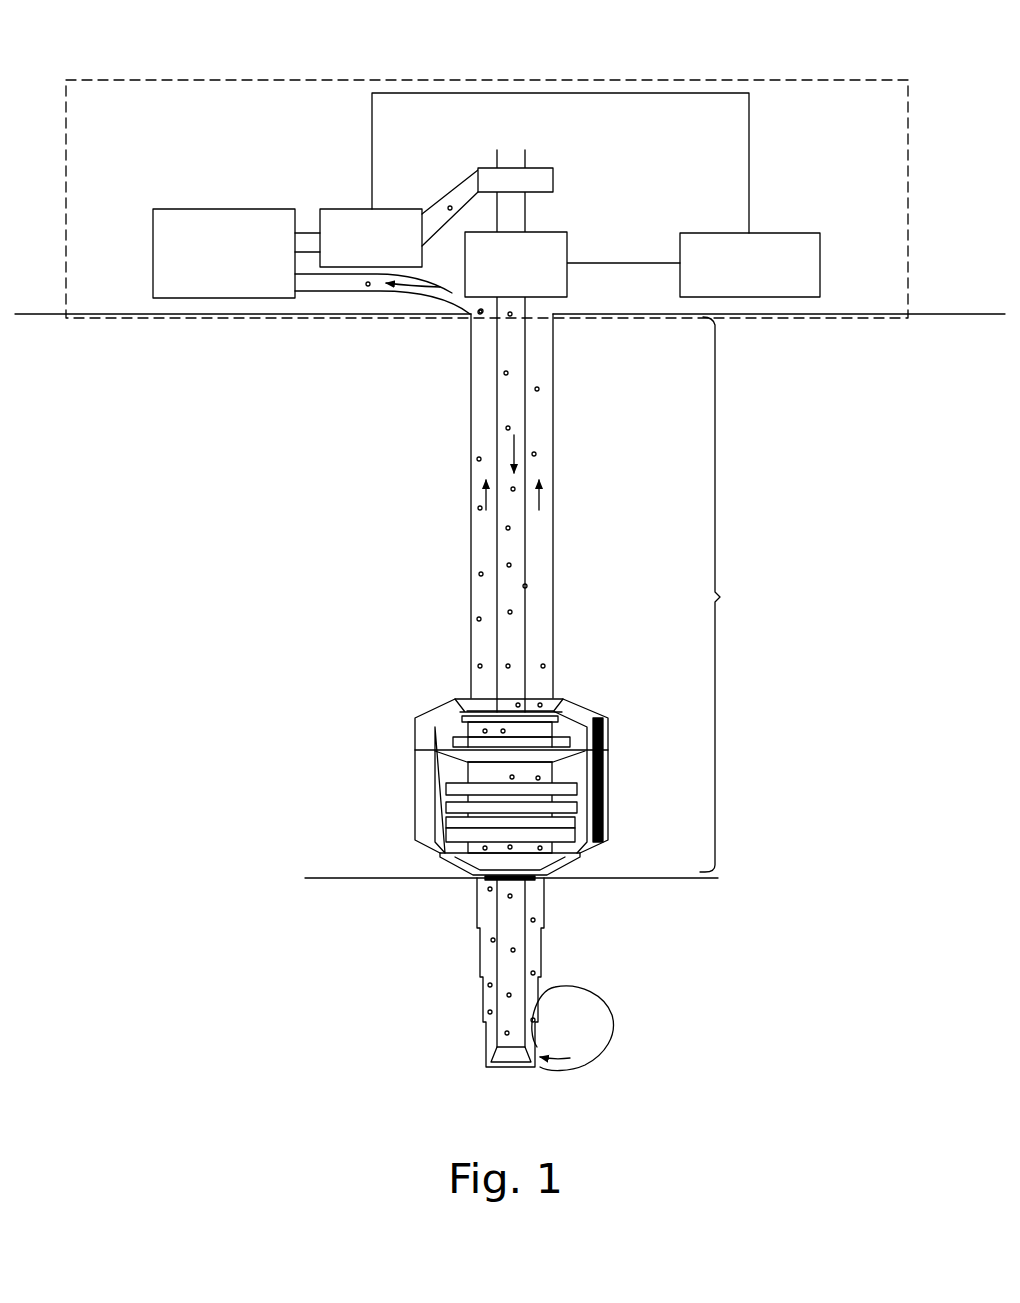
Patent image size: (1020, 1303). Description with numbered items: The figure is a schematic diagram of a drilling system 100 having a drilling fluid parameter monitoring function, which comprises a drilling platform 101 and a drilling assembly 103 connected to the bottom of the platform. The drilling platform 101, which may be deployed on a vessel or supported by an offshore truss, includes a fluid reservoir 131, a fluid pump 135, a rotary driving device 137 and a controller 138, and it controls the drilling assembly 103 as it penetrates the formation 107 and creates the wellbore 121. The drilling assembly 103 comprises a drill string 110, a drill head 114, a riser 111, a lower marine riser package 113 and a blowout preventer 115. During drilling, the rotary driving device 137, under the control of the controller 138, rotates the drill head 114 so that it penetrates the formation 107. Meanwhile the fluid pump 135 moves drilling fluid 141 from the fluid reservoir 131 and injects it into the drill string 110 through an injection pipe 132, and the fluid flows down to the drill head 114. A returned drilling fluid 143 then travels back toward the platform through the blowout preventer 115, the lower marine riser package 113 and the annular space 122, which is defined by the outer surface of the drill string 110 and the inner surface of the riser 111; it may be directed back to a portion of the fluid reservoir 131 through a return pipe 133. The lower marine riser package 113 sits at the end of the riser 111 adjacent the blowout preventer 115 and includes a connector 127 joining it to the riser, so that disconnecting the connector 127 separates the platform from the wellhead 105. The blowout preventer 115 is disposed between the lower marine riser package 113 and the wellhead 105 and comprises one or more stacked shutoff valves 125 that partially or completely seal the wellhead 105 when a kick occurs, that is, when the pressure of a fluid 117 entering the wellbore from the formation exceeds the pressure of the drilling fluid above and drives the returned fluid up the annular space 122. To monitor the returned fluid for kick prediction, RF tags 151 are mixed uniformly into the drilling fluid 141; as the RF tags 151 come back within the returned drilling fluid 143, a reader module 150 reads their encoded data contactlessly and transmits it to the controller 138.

The drilling system 100 is at (124, 46).
The drilling platform 101 is at (620, 80).
The drilling assembly 103 is at (737, 594).
The wellhead 105 is at (514, 881).
The formation 107 is at (337, 878).
The drill string 110 is at (510, 560).
The riser 111 is at (470, 610).
The lower marine riser package 113 is at (450, 703).
The drill head 114 is at (507, 1057).
The blowout preventer 115 is at (424, 797).
The fluid 117 is at (583, 1020).
The wellbore 121 is at (520, 1067).
The annular space 122 is at (545, 548).
The shutoff valves 125 is at (467, 832).
The connector 127 is at (538, 715).
The fluid reservoir 131 is at (153, 255).
The injection pipe 132 is at (433, 210).
The return pipe 133 is at (330, 292).
The fluid pump 135 is at (340, 208).
The rotary driving device 137 is at (550, 232).
The controller 138 is at (820, 262).
The drilling fluid 141 is at (475, 184).
The returned drilling fluid 143 is at (415, 292).
The reader module 150 is at (603, 797).
The RF tags 151 is at (508, 428).